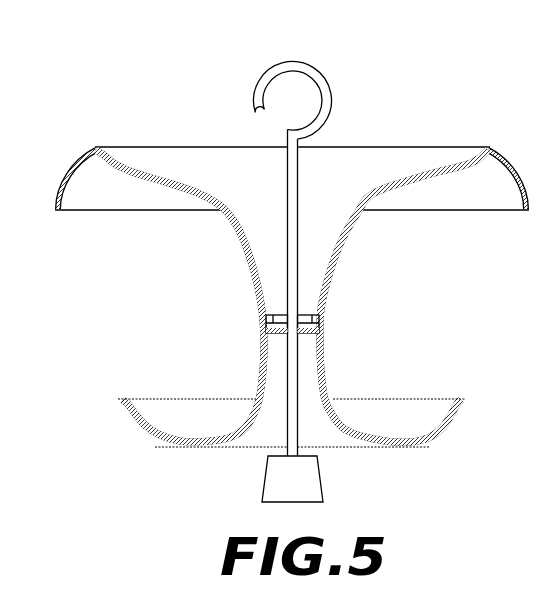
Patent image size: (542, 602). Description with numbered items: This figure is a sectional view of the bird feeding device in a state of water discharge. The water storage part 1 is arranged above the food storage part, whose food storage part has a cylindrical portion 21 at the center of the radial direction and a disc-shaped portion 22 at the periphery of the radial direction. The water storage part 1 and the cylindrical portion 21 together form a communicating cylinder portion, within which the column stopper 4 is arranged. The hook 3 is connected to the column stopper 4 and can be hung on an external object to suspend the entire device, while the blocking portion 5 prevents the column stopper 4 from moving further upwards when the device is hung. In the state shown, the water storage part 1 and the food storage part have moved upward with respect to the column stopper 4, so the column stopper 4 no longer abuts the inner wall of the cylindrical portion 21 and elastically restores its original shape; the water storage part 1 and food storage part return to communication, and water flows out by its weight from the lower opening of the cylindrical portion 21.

The water storage part 1 is at (385, 152).
The hook 3 is at (313, 74).
The column stopper 4 is at (265, 482).
The blocking portion 5 is at (266, 323).
The cylindrical portion 21 is at (312, 375).
The disc-shaped portion 22 is at (433, 420).